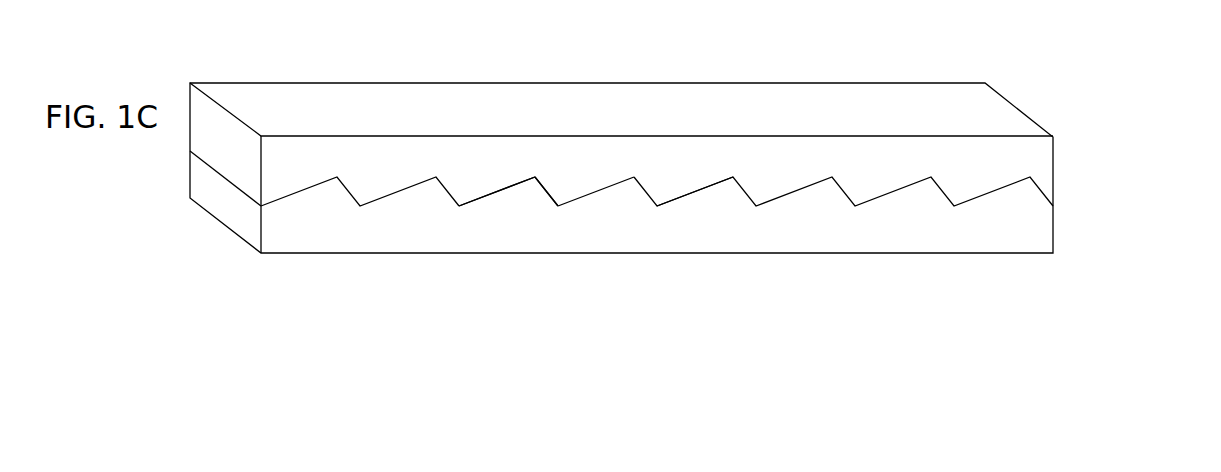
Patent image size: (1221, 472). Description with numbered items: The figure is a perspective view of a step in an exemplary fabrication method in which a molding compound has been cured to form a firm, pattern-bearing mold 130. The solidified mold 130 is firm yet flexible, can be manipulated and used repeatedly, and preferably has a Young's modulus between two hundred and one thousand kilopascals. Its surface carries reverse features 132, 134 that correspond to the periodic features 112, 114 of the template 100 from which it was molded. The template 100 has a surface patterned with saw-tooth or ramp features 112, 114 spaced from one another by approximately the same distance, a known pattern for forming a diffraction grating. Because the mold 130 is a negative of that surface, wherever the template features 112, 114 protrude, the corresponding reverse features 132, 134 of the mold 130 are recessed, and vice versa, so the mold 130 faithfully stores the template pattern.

The template 100 is at (1078, 227).
The mold 130 is at (975, 123).
The reverse feature 132 is at (492, 178).
The reverse feature 134 is at (595, 182).
The periodic feature 112 is at (525, 207).
The periodic feature 114 is at (635, 210).